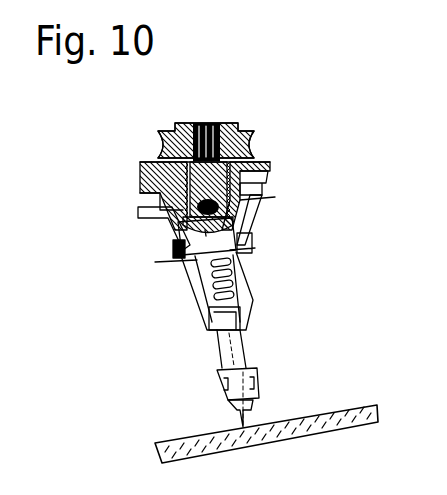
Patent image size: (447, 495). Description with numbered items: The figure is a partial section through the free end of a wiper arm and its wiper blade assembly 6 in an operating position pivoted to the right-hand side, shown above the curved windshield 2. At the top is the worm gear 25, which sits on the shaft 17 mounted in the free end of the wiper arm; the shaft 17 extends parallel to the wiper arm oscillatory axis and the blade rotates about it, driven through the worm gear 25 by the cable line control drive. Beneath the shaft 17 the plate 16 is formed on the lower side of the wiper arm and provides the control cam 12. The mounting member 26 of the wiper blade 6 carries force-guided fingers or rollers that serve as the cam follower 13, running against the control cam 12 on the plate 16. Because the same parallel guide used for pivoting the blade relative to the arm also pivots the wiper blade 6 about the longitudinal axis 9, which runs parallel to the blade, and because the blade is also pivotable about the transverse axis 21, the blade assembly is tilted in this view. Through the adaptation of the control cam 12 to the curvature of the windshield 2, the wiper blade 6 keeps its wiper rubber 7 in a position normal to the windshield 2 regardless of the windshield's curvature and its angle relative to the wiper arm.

The windshield 2 is at (344, 410).
The wiper blade assembly 6 is at (197, 312).
The wiper rubber 7 is at (223, 402).
The longitudinal axis 9 is at (238, 220).
The control cam 12 is at (265, 183).
The cam follower 13 is at (170, 218).
The plate 16 is at (150, 177).
The shaft 17 is at (205, 88).
The transverse axis 21 is at (257, 245).
The worm gear 25 is at (250, 132).
The mounting member 26 is at (197, 260).